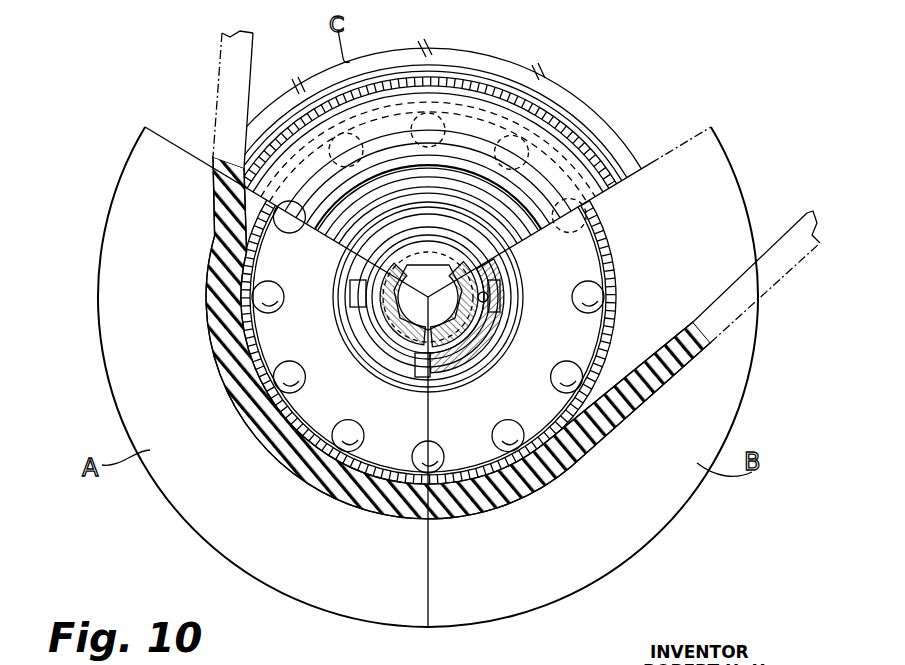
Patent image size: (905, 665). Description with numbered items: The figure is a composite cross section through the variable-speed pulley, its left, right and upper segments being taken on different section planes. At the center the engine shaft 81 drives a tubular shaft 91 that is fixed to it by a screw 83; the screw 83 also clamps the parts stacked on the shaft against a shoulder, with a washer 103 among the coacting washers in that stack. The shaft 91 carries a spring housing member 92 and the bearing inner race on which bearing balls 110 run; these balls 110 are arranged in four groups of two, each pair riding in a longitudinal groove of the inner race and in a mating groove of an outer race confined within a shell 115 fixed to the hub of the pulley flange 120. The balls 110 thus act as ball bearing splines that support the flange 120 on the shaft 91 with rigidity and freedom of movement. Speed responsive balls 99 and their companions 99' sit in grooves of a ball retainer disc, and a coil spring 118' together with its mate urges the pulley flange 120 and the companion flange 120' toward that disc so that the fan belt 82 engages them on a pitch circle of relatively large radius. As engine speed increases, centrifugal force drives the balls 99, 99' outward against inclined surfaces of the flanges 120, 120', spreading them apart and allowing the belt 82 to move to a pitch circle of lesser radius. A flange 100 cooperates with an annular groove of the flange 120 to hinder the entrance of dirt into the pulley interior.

The engine shaft 81 is at (403, 325).
The fan belt 82 is at (221, 378).
The screw 83 is at (432, 273).
The tubular shaft 91 is at (363, 362).
The spring housing member 92 is at (595, 167).
The speed responsive ball 99 is at (428, 337).
The speed responsive ball 99' is at (491, 242).
The flange 100 is at (209, 257).
The washer 103 is at (426, 252).
The bearing ball 110 is at (500, 291).
The shell 115 is at (522, 303).
The coil spring 118' is at (428, 183).
The pulley flange 120 is at (423, 377).
The pulley flange 120' is at (482, 329).